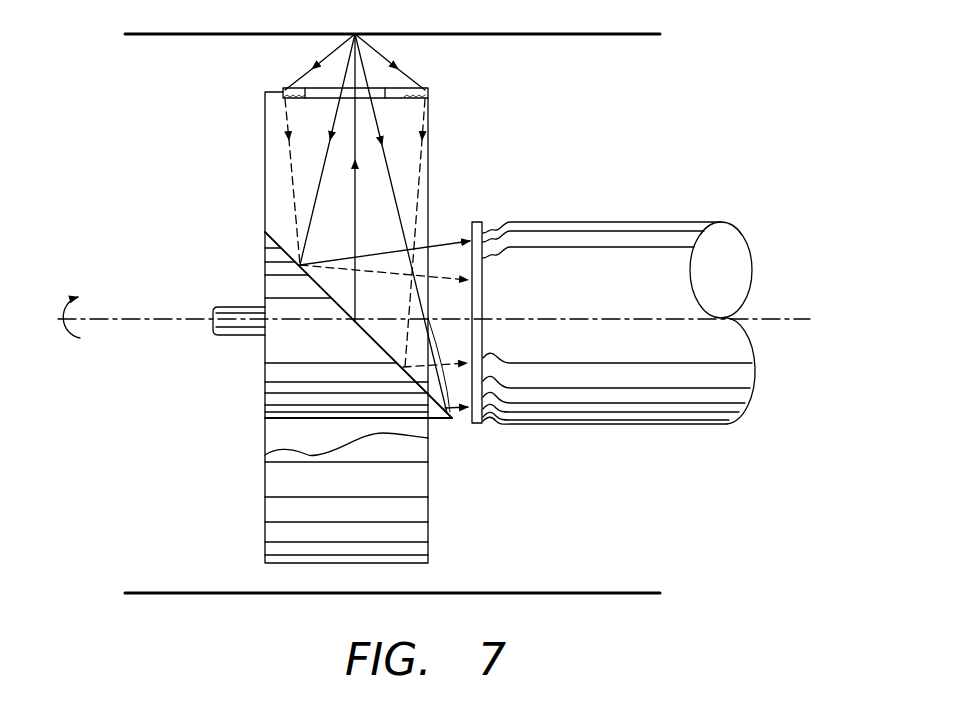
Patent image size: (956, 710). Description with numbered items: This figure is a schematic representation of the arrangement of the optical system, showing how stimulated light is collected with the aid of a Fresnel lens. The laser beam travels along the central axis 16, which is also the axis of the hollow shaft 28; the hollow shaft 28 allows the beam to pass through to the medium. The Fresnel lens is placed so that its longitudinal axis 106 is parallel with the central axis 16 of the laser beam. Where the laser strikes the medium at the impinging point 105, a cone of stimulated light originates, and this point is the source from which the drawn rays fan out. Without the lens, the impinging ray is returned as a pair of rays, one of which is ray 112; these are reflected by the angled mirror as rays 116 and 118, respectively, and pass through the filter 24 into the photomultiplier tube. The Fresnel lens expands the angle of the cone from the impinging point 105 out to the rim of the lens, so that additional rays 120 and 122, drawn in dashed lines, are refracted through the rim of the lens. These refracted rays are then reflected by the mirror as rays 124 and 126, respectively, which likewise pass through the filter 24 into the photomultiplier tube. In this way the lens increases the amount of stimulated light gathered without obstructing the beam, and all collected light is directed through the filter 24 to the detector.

The impinging point 105 is at (356, 33).
The longitudinal axis 106 is at (426, 88).
The ray 120 is at (288, 155).
The ray 112 is at (313, 208).
The ray 122 is at (424, 180).
The ray 116 is at (433, 245).
The ray 124 is at (438, 278).
The ray 126 is at (445, 366).
The ray 118 is at (452, 410).
The axis 16 is at (158, 318).
The hollow shaft 28 is at (253, 336).
The filter 24 is at (578, 422).